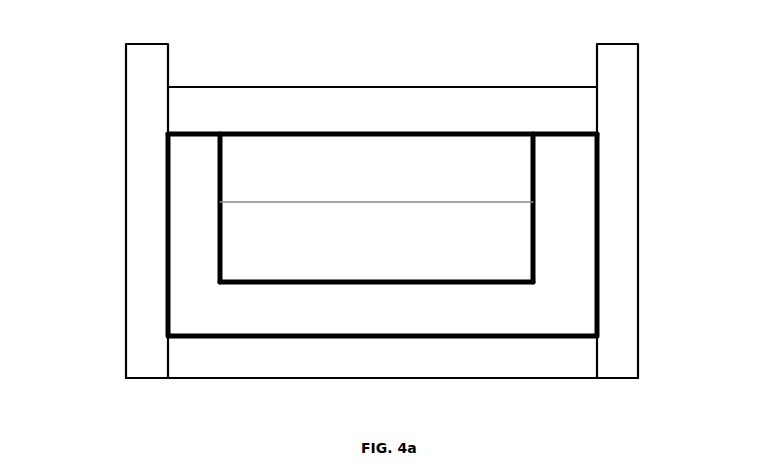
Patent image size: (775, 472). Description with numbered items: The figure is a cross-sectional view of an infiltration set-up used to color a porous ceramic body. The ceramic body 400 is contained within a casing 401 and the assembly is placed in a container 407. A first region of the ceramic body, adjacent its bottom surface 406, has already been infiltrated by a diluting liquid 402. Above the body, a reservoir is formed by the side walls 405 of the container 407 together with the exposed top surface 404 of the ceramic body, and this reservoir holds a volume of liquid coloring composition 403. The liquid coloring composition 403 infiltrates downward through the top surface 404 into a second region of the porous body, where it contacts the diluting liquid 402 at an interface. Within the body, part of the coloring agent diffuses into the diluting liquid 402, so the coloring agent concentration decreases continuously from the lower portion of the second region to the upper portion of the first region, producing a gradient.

The ceramic body 400 is at (297, 193).
The casing 401 is at (525, 317).
The diluting liquid 402 is at (550, 205).
The liquid coloring composition 403 is at (153, 130).
The top surface 404 is at (462, 135).
The side walls 405 is at (597, 118).
The bottom surface 406 is at (300, 275).
The container 407 is at (509, 363).